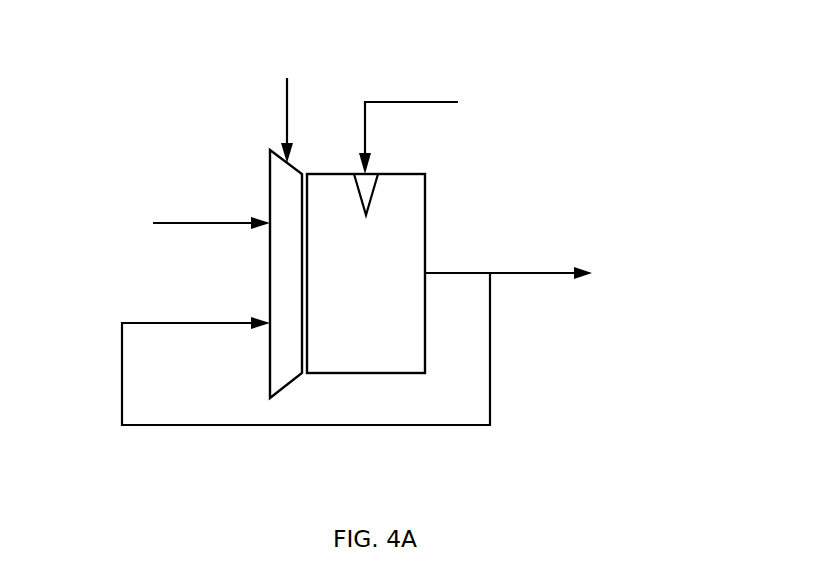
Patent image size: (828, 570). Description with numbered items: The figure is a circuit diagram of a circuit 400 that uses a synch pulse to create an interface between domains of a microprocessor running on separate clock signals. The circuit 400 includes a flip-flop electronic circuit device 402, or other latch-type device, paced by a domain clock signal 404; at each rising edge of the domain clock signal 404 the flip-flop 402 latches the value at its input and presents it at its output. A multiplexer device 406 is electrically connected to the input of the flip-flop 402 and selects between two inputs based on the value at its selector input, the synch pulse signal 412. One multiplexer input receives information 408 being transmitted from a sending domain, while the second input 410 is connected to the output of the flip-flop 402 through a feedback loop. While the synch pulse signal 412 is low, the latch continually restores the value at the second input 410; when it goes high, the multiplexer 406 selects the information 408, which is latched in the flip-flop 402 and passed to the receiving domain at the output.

The circuit 400 is at (156, 113).
The flip-flop electronic circuit device 402 is at (366, 273).
The domain clock signal 404 is at (373, 102).
The multiplexer device 406 is at (270, 201).
The information 408 is at (252, 228).
The second input 410 is at (252, 326).
The synch pulse signal 412 is at (288, 125).